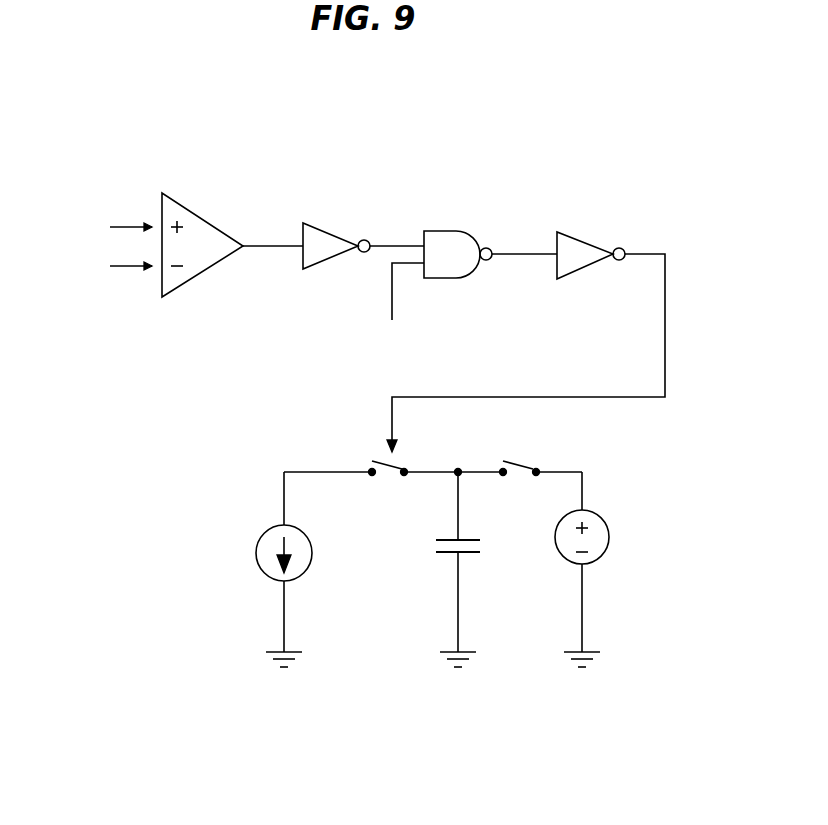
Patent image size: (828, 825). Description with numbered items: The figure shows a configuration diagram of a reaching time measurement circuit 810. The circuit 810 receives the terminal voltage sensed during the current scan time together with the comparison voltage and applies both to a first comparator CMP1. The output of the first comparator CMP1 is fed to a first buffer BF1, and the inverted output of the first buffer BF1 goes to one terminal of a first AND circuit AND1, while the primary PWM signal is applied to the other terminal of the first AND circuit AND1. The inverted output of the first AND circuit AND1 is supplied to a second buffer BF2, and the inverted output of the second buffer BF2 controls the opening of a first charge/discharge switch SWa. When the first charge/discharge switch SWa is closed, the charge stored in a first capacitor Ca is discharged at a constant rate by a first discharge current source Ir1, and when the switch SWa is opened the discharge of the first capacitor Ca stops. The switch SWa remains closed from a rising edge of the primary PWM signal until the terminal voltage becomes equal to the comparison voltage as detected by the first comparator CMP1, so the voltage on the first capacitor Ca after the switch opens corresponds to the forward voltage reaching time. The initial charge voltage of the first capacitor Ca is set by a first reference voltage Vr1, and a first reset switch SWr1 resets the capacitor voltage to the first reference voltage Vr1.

The reaching time measurement circuit 810 is at (656, 120).
The first comparator CMP1 is at (202, 224).
The first buffer BF1 is at (336, 221).
The first AND circuit AND1 is at (451, 226).
The second buffer BF2 is at (591, 225).
The first charge/discharge switch SWa is at (389, 488).
The first reset switch SWr1 is at (520, 488).
The first discharge current source Ir1 is at (225, 535).
The first capacitor Ca is at (437, 569).
The first reference voltage Vr1 is at (607, 569).